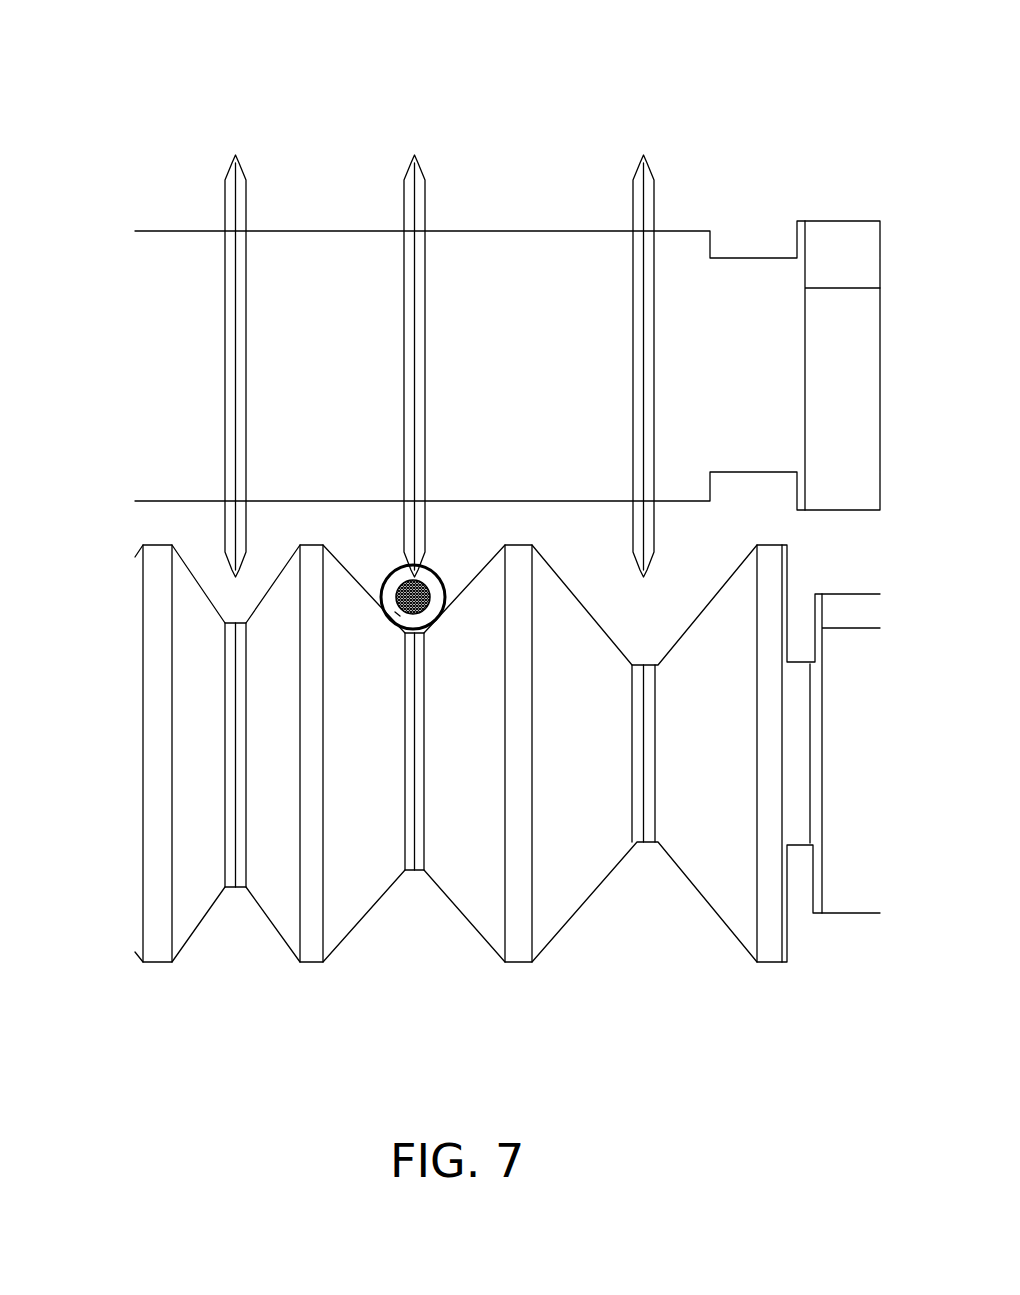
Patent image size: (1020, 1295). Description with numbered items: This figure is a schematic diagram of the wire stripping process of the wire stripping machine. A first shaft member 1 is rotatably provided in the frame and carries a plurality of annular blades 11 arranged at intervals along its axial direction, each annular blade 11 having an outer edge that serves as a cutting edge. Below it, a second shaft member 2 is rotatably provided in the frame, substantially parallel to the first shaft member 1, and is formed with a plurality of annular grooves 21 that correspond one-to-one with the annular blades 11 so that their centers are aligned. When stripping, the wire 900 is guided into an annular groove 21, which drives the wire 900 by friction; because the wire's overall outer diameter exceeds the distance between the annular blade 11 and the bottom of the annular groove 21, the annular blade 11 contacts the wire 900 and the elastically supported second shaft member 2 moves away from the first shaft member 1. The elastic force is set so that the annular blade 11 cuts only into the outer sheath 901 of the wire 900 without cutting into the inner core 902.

The first shaft member 1 is at (163, 283).
The annular blades 11 is at (233, 160).
The second shaft member 2 is at (500, 828).
The annular grooves 21 is at (232, 888).
The wire 900 is at (392, 578).
The outer sheath 901 is at (397, 613).
The inner core 902 is at (405, 598).